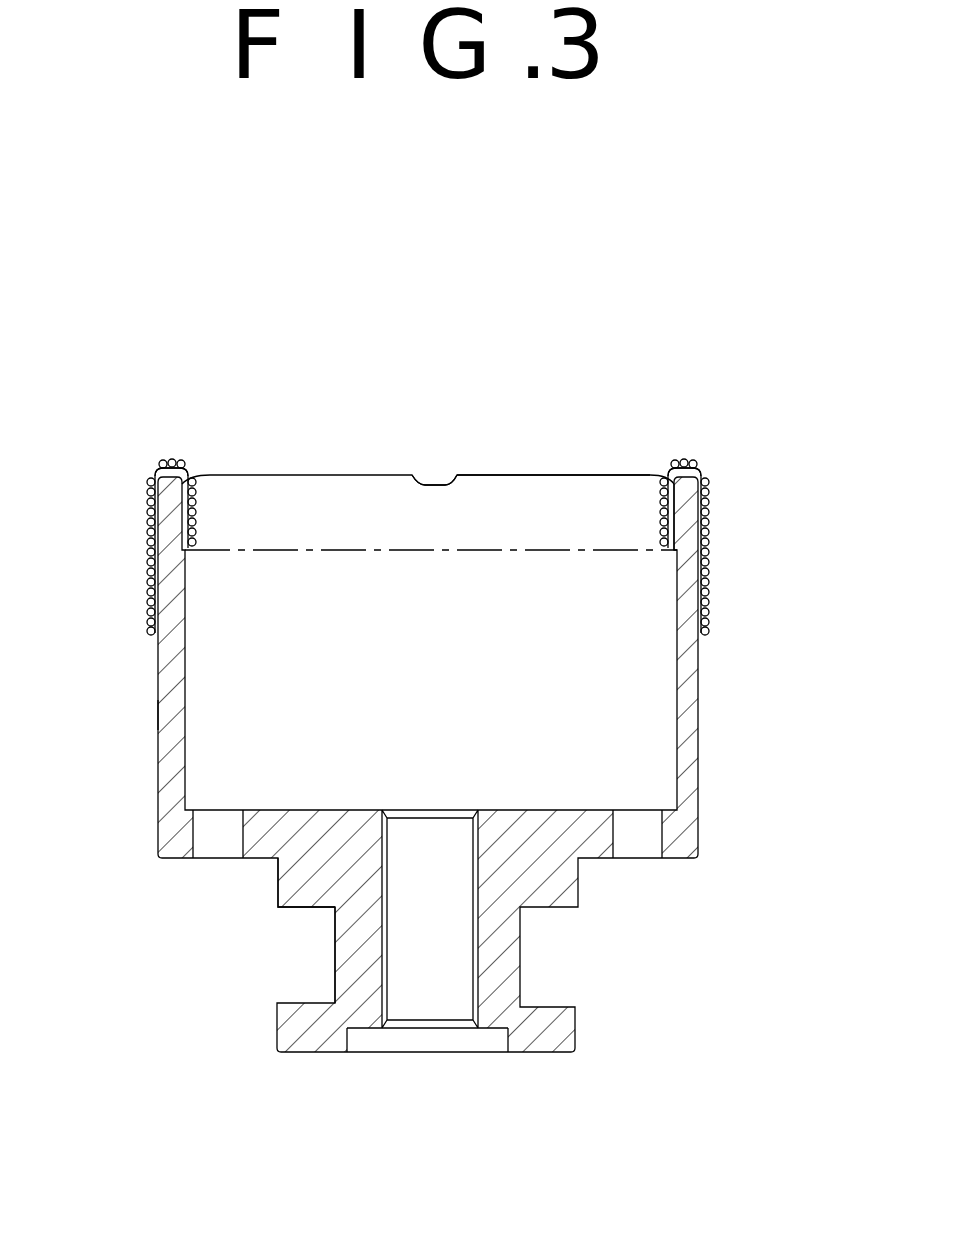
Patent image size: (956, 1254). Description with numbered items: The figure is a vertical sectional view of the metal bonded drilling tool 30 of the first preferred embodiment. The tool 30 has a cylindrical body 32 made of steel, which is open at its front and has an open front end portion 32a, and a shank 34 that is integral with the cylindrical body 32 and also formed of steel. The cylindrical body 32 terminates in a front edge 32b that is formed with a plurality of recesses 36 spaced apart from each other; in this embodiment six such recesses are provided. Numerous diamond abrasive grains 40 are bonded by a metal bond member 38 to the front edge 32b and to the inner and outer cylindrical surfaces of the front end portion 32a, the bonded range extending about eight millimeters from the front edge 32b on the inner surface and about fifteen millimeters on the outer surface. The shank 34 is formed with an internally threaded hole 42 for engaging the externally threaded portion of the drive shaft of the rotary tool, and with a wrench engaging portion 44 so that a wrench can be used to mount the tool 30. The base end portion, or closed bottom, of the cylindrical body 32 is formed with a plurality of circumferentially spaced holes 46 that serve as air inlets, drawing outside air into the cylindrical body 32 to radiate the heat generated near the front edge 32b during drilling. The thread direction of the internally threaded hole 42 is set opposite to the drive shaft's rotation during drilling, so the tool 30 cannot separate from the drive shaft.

The metal bonded drilling tool 30 is at (714, 711).
The cylindrical body 32 is at (157, 715).
The open front end portion 32a is at (692, 538).
The front edge 32b is at (543, 475).
The shank 34 is at (287, 887).
The recesses 36 is at (422, 483).
The metal bond member 38 is at (150, 575).
The diamond abrasive grains 40 is at (155, 485).
The internally threaded hole 42 is at (473, 970).
The wrench engaging portion 44 is at (335, 955).
The holes 46 is at (615, 837).